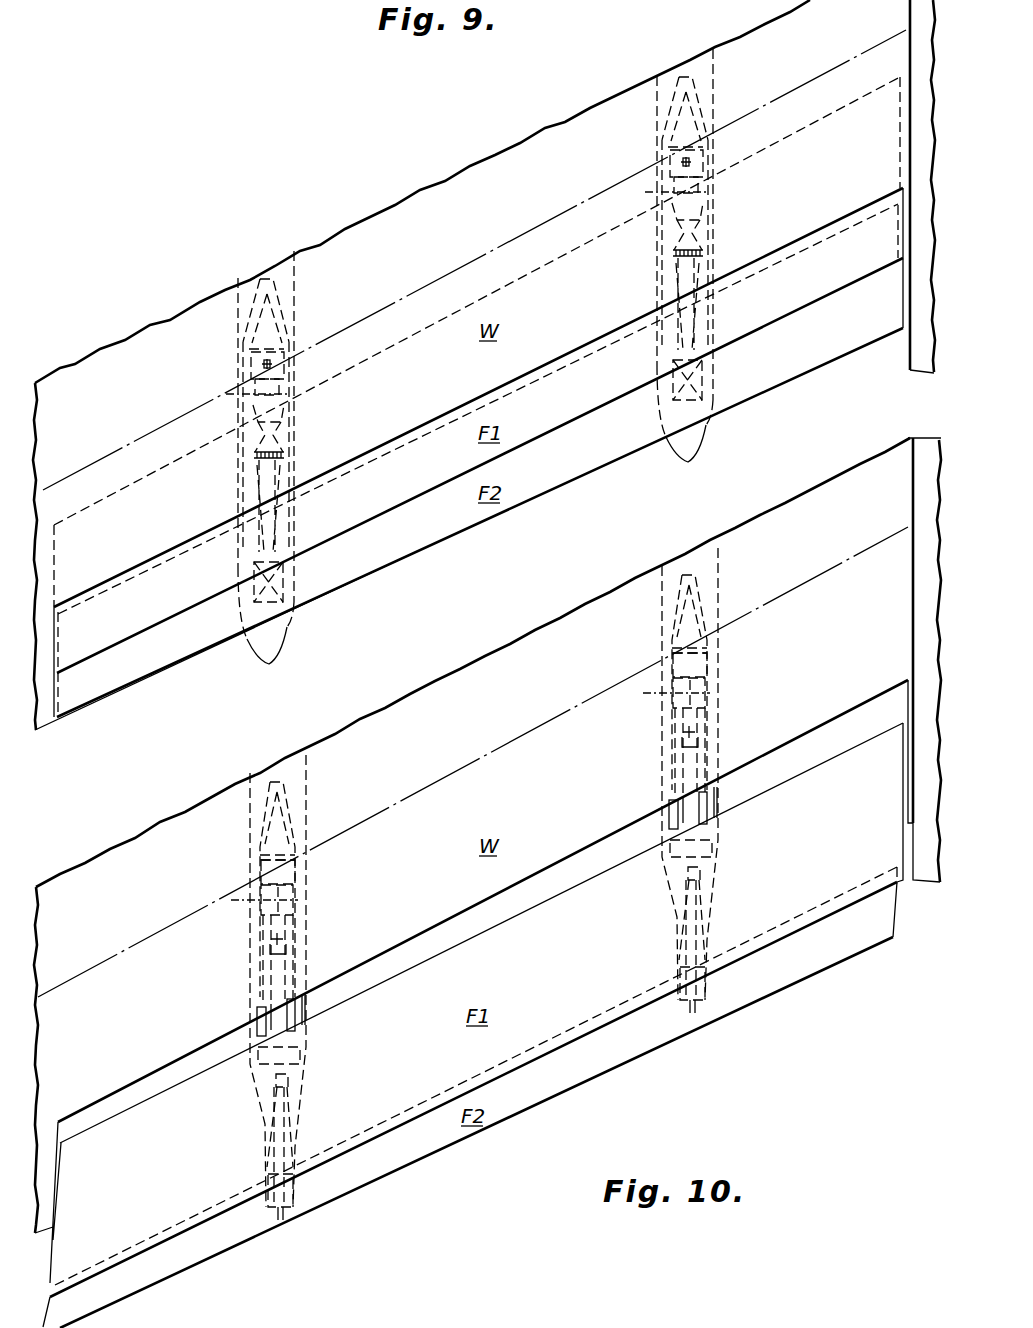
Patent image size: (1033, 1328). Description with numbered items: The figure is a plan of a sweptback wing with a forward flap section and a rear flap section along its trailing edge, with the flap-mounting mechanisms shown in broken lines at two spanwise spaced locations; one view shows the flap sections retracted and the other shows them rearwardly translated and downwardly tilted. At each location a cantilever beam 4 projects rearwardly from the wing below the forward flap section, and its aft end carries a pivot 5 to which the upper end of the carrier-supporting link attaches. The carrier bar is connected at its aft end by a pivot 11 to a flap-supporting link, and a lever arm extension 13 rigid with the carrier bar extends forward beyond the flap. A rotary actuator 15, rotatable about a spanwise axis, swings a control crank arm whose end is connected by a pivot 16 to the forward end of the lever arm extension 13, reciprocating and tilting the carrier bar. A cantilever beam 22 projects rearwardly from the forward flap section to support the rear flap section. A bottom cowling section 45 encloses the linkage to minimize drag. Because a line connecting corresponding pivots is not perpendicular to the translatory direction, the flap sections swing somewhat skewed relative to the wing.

In FIG. 10, the cantilever beam 4 is at (672, 830).
In FIG. 9, the pivot 5 is at (716, 250).
In FIG. 10, the pivot 5 is at (722, 852).
In FIG. 9, the pivot 11 is at (657, 281).
In FIG. 10, the pivot 11 is at (704, 878).
In FIG. 10, the lever arm extension 13 is at (672, 812).
In FIG. 9, the rotary actuator 15 is at (646, 193).
In FIG. 10, the rotary actuator 15 is at (662, 693).
In FIG. 9, the pivot 16 is at (714, 148).
In FIG. 10, the pivot 16 is at (697, 731).
In FIG. 9, the cantilever beam 22 is at (714, 331).
In FIG. 10, the cantilever beam 22 is at (709, 945).
In FIG. 9, the bottom cowling section 45 is at (657, 368).
In FIG. 10, the bottom cowling section 45 is at (664, 886).